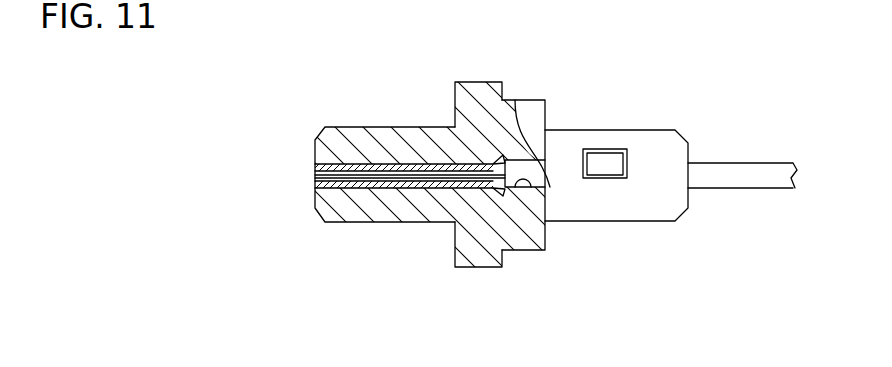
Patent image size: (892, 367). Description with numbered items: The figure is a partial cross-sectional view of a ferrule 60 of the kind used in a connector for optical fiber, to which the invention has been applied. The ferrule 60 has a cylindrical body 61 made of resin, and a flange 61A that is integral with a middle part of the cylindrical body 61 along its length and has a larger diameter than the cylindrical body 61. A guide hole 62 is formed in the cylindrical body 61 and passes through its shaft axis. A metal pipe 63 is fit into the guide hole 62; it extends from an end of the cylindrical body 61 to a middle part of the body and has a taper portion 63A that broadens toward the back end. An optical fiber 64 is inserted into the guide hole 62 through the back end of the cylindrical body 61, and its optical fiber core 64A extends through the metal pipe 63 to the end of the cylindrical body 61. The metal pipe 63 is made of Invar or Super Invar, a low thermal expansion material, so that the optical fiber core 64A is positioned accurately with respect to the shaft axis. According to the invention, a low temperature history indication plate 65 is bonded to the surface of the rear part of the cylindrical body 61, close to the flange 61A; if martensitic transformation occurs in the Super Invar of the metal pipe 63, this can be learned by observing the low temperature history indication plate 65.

The ferrule 60 is at (647, 40).
The cylindrical body 61 is at (627, 130).
The flange 61A is at (472, 268).
The guide hole 62 is at (512, 192).
The metal pipe 63 is at (351, 163).
The taper portion 63A is at (497, 158).
The optical fiber 64 is at (717, 162).
The optical fiber core 64A is at (503, 153).
The low temperature history indication plate 65 is at (610, 180).